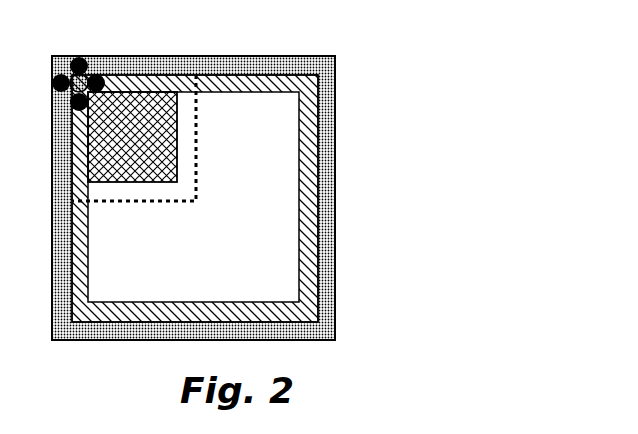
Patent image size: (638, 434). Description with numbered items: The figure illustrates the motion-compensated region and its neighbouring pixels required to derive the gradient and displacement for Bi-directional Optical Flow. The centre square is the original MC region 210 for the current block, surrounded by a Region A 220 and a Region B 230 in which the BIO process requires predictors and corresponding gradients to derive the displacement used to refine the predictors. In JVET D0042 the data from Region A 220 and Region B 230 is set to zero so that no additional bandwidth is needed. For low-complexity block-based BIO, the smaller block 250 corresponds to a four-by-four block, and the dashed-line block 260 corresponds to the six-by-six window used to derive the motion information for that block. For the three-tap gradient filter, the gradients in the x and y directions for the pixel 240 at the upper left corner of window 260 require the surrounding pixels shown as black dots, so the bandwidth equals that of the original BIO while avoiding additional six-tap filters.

The original MC region 210 is at (318, 213).
The Region A 220 is at (326, 110).
The Region B 230 is at (307, 158).
The pixel 240 is at (93, 67).
The smaller block 250 is at (177, 118).
The dashed-line block 260 is at (196, 167).